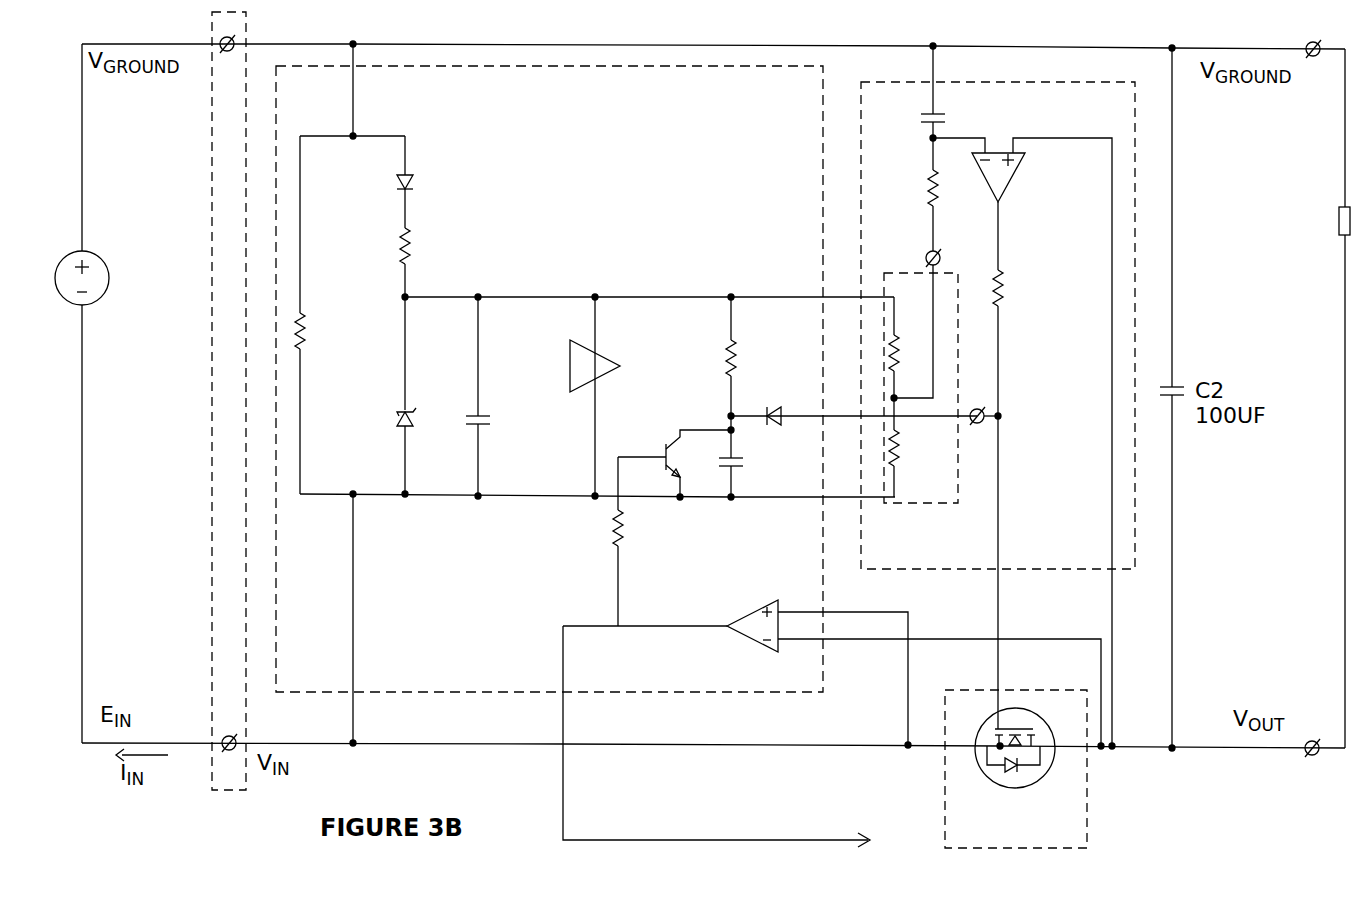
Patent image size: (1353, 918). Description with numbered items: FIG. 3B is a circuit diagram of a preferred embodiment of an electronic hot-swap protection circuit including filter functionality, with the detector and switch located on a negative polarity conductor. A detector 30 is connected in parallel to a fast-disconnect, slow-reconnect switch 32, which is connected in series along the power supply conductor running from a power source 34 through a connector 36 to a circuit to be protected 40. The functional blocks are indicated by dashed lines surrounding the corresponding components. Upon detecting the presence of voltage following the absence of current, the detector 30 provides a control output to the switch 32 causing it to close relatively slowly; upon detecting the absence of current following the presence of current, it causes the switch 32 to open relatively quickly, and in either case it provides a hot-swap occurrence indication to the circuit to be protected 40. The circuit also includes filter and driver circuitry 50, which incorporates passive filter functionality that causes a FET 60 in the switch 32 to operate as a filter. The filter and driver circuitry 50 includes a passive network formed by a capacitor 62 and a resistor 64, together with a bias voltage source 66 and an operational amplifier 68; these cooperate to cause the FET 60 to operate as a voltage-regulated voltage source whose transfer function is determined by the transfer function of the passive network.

The detector 30 is at (634, 68).
The fast-disconnect, slow-reconnect switch 32 is at (940, 776).
The power source 34 is at (96, 258).
The connector 36 is at (248, 14).
The circuit to be protected 40 is at (1341, 210).
The filter and driver circuitry 50 is at (1113, 82).
The FET 60 is at (1040, 720).
The capacitor 62 is at (940, 118).
The resistor 64 is at (938, 198).
The bias voltage source 66 is at (884, 273).
The operational amplifier 68 is at (1010, 190).